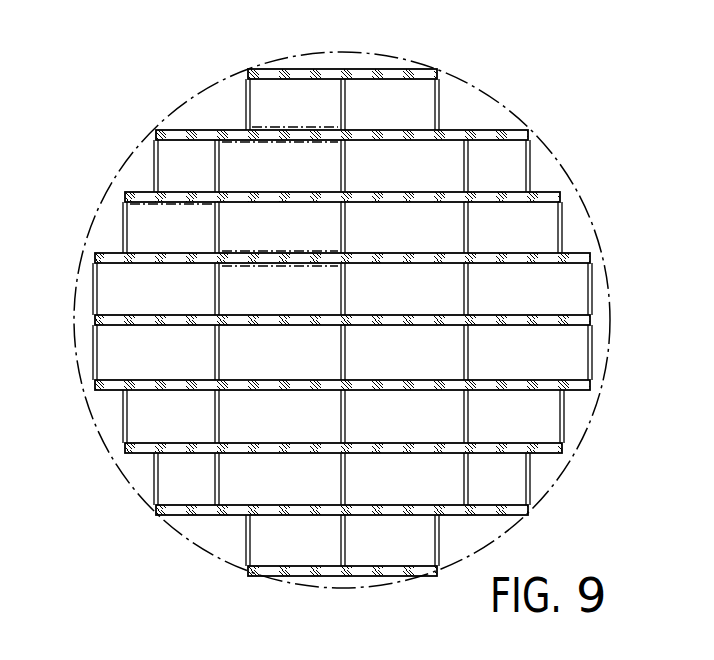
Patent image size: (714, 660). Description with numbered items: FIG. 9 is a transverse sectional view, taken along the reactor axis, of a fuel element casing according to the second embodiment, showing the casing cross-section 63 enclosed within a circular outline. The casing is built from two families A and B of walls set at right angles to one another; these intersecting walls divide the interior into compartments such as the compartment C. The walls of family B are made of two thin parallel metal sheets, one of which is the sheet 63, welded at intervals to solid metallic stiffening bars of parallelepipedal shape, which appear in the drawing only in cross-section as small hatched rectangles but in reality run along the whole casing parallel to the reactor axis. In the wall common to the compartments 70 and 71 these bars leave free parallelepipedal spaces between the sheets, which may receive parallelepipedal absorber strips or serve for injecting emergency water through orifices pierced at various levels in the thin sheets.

The cross-section of casing 63 is at (91, 360).
The compartment 70 is at (292, 180).
The compartment 71 is at (292, 243).
The family of walls A is at (350, 101).
The family of walls B is at (144, 210).
The compartment C is at (238, 152).